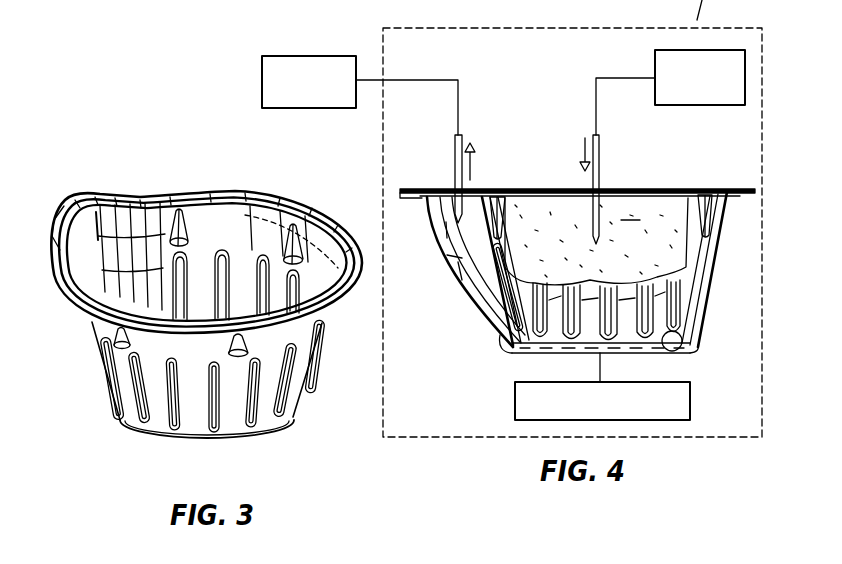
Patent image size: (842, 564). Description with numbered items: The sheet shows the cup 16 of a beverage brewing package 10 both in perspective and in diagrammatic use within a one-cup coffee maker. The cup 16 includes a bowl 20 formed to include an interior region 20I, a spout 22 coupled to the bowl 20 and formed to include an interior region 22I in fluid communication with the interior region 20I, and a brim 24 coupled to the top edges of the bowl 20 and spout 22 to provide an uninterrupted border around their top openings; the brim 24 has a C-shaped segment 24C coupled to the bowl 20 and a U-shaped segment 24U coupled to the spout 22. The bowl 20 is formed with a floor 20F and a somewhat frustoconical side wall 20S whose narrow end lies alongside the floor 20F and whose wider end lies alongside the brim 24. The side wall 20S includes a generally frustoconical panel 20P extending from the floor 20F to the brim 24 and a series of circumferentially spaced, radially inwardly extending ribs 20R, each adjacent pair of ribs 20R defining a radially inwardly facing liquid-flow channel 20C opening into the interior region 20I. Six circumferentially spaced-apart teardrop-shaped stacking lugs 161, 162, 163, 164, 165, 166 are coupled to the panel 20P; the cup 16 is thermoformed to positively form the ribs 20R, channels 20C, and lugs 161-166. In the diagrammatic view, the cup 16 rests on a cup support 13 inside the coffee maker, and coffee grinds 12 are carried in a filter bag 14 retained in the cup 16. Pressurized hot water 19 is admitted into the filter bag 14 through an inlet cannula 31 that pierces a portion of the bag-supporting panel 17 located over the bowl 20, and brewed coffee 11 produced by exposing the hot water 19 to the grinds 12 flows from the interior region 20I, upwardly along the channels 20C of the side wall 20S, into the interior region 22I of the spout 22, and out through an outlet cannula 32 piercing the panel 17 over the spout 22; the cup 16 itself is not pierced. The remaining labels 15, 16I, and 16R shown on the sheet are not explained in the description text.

In FIG. 4, the beverage brewing package 10 is at (684, 165).
In FIG. 4, the brewed coffee 11 is at (300, 55).
In FIG. 4, the coffee grinds 12 is at (596, 241).
In FIG. 4, the cup support 13 is at (692, 398).
In FIG. 4, the filter bag 14 is at (684, 285).
In FIG. 4, the beverage cartridge 15 is at (790, 158).
In FIG. 3, the cup 16 is at (94, 392).
In FIG. 4, the cup 16 is at (728, 222).
In FIG. 3, the lid inner region 16I is at (281, 196).
In FIG. 3, the lid rim 16R is at (300, 198).
In FIG. 3, the stacking lug 161 is at (310, 231).
In FIG. 3, the stacking lug 162 is at (188, 218).
In FIG. 3, the stacking lug 163 is at (68, 245).
In FIG. 3, the stacking lug 164 is at (110, 354).
In FIG. 3, the stacking lug 165 is at (257, 345).
In FIG. 3, the stacking lug 166 is at (330, 318).
In FIG. 4, the bag-supporting panel 17 is at (730, 181).
In FIG. 4, the hot water source / pressurized hot water 19 is at (745, 76).
In FIG. 3, the bowl 20 is at (247, 300).
In FIG. 4, the bowl 20 is at (500, 333).
In FIG. 3, the liquid-flow channel 20C is at (165, 265).
In FIG. 4, the liquid-flow channel 20C is at (590, 307).
In FIG. 4, the floor 20F is at (688, 345).
In FIG. 3, the interior region of bowl 20I is at (216, 238).
In FIG. 3, the frustoconical panel 20P is at (167, 432).
In FIG. 3, the rib 20R is at (140, 398).
In FIG. 3, the side wall 20S is at (144, 464).
In FIG. 4, the side wall 20S is at (715, 277).
In FIG. 3, the spout 22 is at (120, 212).
In FIG. 4, the spout 22 is at (445, 277).
In FIG. 3, the interior region of spout 22I is at (99, 213).
In FIG. 3, the brim 24 is at (347, 224).
In FIG. 3, the C-shaped segment 24C is at (98, 294).
In FIG. 3, the U-shaped segment 24U is at (62, 199).
In FIG. 4, the inlet cannula 31 is at (600, 166).
In FIG. 4, the outlet cannula 32 is at (455, 176).